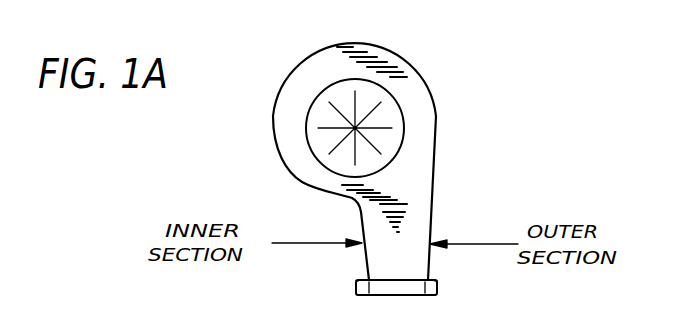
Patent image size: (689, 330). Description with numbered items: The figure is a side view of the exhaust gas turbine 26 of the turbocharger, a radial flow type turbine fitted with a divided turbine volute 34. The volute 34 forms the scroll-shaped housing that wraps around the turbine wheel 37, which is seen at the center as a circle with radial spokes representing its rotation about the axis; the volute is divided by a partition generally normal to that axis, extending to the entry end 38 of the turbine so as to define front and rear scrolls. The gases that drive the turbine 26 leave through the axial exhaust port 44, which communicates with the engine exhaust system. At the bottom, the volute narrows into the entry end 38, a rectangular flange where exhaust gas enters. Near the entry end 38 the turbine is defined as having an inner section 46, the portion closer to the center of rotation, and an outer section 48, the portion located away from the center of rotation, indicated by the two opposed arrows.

The exhaust gas turbine 26 is at (437, 92).
The turbine volute 34 is at (437, 118).
The turbine wheel 37 is at (382, 131).
The axial exhaust port 44 is at (372, 79).
The entry end 38 is at (415, 296).
The inner section 46 is at (357, 280).
The outer section 48 is at (437, 281).